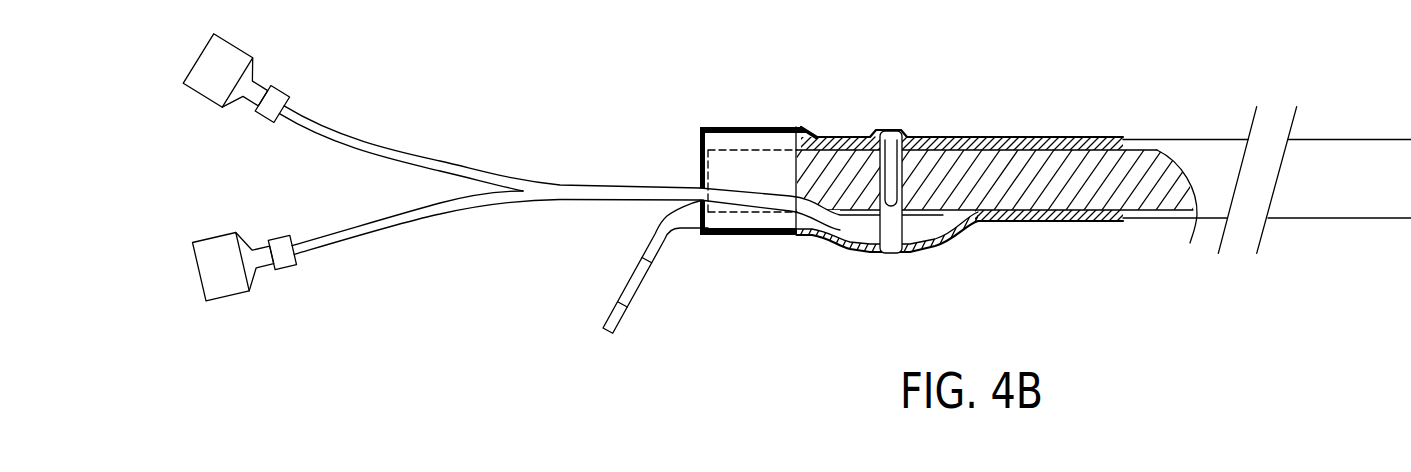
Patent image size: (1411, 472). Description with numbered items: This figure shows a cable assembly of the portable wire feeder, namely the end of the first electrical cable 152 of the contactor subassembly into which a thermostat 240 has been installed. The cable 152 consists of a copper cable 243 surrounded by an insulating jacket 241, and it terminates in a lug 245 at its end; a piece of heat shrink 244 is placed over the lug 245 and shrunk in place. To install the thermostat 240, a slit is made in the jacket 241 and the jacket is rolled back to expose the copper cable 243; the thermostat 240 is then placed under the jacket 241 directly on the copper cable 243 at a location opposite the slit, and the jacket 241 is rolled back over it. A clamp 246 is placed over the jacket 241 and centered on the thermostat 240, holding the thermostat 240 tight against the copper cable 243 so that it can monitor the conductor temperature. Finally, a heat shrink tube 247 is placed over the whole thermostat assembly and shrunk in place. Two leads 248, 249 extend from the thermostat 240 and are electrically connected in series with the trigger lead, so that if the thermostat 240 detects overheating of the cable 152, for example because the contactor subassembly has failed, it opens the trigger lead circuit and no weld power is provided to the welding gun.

The first electrical cable 152 is at (1170, 285).
The thermostat 240 is at (863, 240).
The jacket 241 is at (1157, 140).
The copper cable 243 is at (977, 158).
The heat shrink 244 is at (753, 127).
The lug 245 is at (717, 140).
The clamp 246 is at (887, 130).
The heat shrink tube 247 is at (1041, 137).
The lead 248 is at (393, 143).
The lead 249 is at (403, 226).